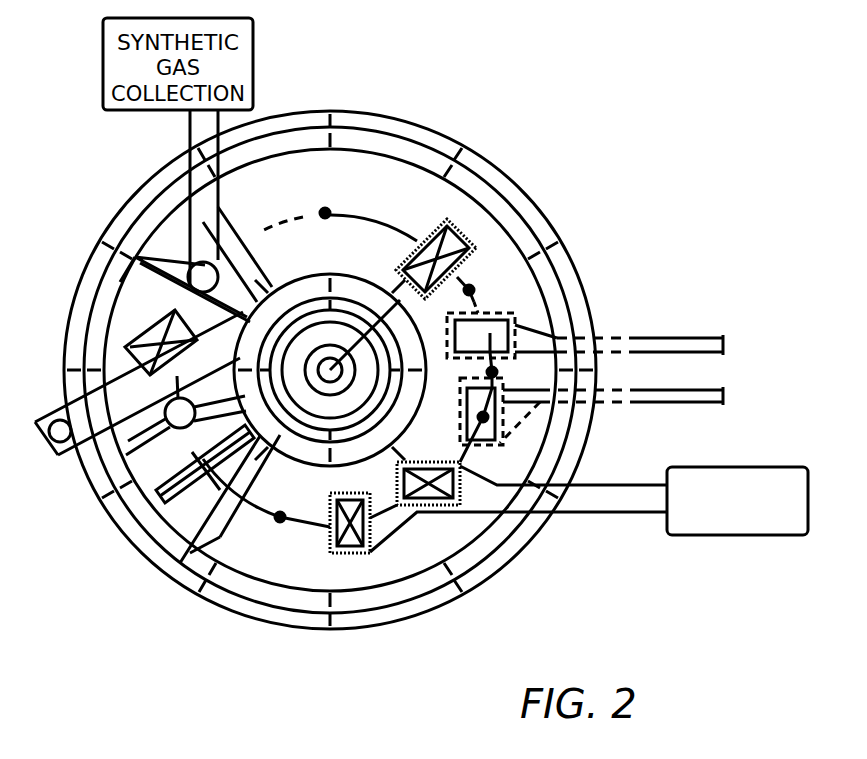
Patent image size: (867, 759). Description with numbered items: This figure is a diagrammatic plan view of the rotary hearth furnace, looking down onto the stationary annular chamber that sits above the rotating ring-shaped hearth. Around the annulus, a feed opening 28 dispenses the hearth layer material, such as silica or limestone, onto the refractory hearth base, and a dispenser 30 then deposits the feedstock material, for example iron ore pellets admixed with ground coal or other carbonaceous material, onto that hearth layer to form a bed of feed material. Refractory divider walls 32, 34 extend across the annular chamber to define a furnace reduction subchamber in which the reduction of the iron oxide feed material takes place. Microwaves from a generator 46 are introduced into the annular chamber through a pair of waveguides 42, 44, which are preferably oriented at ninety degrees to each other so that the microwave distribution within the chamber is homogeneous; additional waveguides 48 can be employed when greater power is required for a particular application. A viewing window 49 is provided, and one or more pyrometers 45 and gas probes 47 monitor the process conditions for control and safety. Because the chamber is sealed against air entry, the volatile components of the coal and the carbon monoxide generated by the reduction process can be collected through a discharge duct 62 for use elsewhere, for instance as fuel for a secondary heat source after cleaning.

The feed opening 28 is at (178, 428).
The dispenser 30 is at (197, 476).
The refractory divider wall 32 is at (262, 250).
The refractory divider wall 34 is at (228, 538).
The waveguide 42 is at (353, 553).
The waveguide 44 is at (433, 505).
The pyrometer 45 is at (477, 243).
The generator 46 is at (705, 535).
The gas probe 47 is at (492, 372).
The additional waveguide 48 is at (515, 313).
The viewing window 49 is at (470, 290).
The discharge duct 62 is at (190, 150).